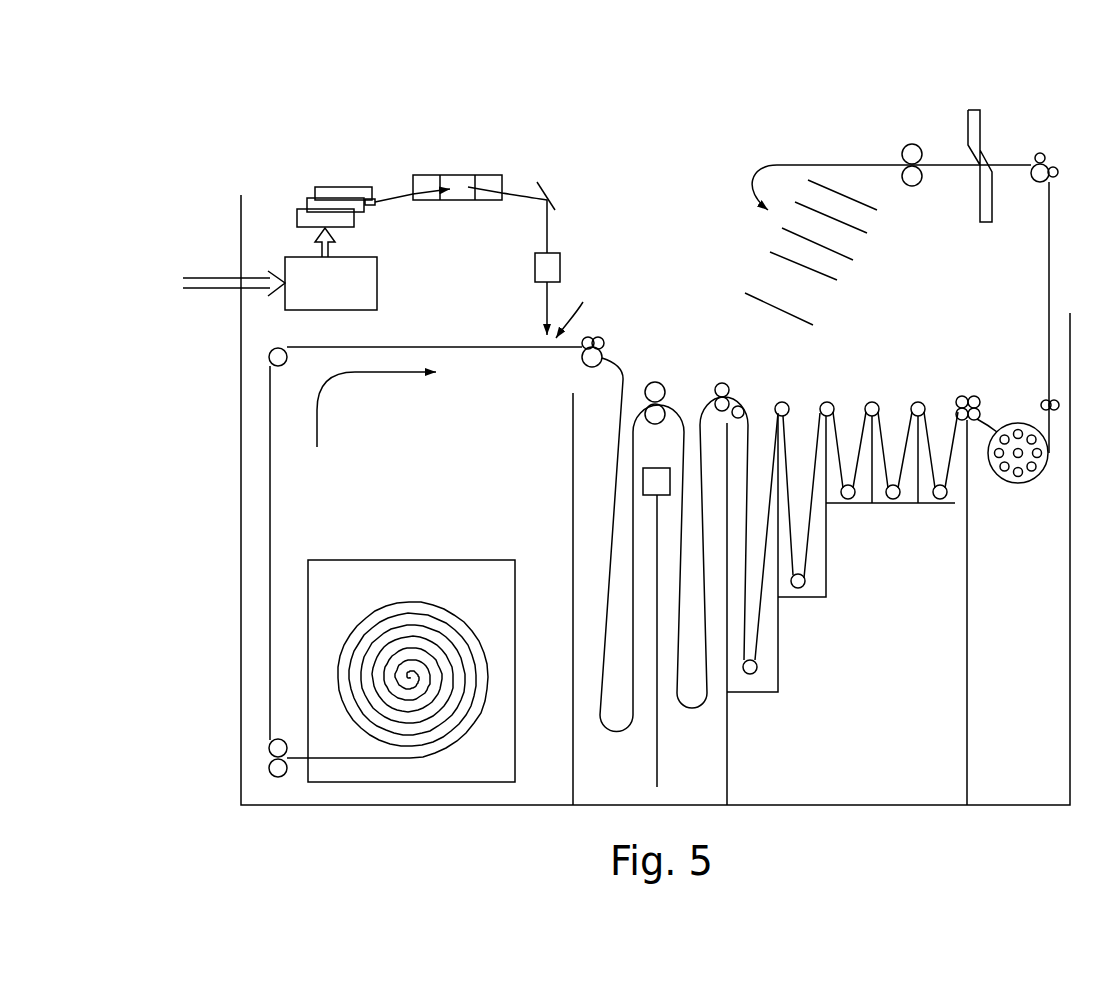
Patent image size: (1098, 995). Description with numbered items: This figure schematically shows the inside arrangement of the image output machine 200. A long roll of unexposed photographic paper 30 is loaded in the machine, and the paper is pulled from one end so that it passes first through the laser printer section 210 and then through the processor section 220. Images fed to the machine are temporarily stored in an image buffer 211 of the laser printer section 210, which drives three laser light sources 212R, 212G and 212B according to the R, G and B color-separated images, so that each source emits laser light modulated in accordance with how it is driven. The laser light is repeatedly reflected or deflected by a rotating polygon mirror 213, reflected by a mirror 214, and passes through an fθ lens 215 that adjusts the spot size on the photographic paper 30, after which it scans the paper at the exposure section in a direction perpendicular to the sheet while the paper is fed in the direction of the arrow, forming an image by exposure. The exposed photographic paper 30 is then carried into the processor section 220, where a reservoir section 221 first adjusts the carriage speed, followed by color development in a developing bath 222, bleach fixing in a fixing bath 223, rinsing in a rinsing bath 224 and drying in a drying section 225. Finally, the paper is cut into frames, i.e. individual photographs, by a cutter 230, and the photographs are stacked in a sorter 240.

The image output machine 200 is at (948, 88).
The laser printer section 210 is at (416, 190).
The image buffer 211 is at (378, 281).
The laser light source 212R is at (297, 212).
The laser light source 212G is at (307, 198).
The laser light source 212B is at (341, 187).
The rotating polygon mirror 213 is at (487, 175).
The mirror 214 is at (538, 184).
The fθ lens 215 is at (560, 267).
The processor section 220 is at (816, 453).
The reservoir section 221 is at (658, 372).
The developing bath 222 is at (748, 393).
The fixing bath 223 is at (782, 395).
The rinsing bath 224 is at (915, 395).
The drying section 225 is at (1012, 400).
The cutter 230 is at (985, 195).
The sorter 240 is at (867, 282).
The photographic paper 30 is at (457, 578).